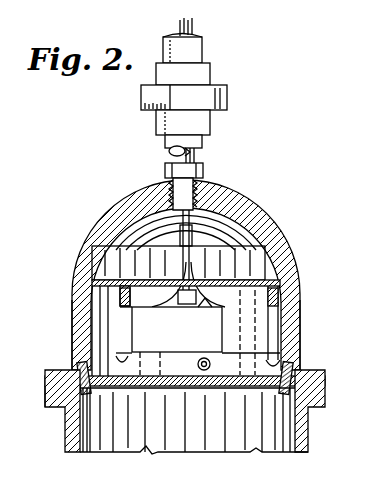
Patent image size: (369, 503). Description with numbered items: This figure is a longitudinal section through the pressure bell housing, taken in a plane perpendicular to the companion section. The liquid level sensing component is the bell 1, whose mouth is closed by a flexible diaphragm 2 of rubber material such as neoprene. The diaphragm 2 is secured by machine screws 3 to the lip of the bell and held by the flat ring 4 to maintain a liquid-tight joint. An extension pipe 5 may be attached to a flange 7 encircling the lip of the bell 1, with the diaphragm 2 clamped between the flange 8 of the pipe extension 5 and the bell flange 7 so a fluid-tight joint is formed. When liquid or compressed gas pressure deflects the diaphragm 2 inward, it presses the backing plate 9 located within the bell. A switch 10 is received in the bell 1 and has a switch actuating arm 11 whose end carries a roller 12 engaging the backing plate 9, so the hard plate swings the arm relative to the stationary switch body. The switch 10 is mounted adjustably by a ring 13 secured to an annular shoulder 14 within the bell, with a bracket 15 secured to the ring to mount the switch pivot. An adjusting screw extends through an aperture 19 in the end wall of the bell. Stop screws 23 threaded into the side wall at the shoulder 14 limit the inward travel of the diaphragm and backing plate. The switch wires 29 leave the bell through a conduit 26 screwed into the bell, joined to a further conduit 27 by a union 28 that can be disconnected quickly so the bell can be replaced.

The bell 1 is at (275, 232).
The diaphragm 2 is at (205, 386).
The machine screws 3 is at (78, 362).
The flat ring 4 is at (180, 405).
The extension pipe 5 is at (300, 435).
The flange 7 is at (50, 370).
The flange 8 is at (46, 407).
The backing plate 9 is at (250, 376).
The switch 10 is at (198, 341).
The switch actuating arm 11 is at (219, 325).
The roller 12 is at (211, 364).
The ring 13 is at (298, 264).
The annular shoulder 14 is at (90, 287).
The bracket 15 is at (136, 296).
The aperture 19 is at (193, 270).
The stop screws 23 is at (120, 294).
The conduit 26 is at (200, 165).
The further conduit 27 is at (200, 50).
The union 28 is at (225, 101).
The wires 29 is at (170, 152).